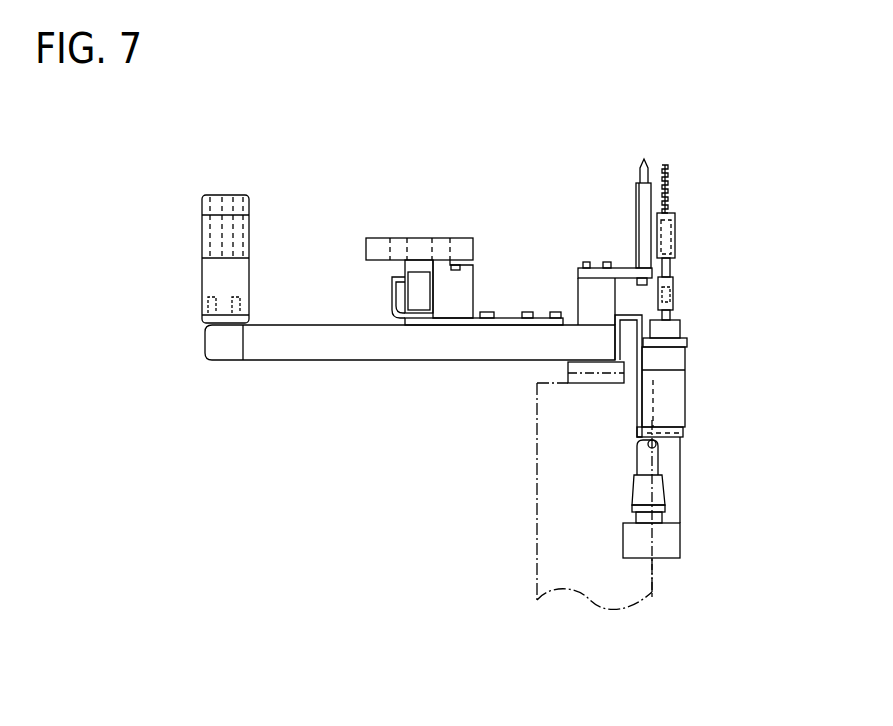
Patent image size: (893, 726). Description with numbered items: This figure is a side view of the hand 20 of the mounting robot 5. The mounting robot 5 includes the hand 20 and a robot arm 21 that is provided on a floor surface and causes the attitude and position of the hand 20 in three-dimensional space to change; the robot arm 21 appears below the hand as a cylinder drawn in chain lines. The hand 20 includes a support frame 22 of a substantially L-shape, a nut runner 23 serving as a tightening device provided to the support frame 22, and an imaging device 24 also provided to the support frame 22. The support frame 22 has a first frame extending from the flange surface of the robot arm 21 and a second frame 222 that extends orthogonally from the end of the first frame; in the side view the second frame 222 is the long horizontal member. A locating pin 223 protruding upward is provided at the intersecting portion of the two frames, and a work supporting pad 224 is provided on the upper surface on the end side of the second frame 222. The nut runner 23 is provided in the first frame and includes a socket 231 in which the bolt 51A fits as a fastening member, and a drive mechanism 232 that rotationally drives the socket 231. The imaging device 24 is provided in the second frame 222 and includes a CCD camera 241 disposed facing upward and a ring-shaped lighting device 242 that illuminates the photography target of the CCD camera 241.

The mounting robot 5 is at (371, 150).
The hand 20 is at (517, 190).
The robot arm 21 is at (530, 528).
The support frame 22 is at (394, 348).
The second frame 222 is at (457, 348).
The locating pin 223 is at (638, 205).
The work supporting pad 224 is at (240, 235).
The nut runner 23 is at (701, 352).
The socket 231 is at (670, 245).
The drive mechanism 232 is at (672, 405).
The imaging device 24 is at (496, 178).
The CCD camera 241 is at (418, 262).
The lighting device 242 is at (465, 250).
The bolt 51A is at (670, 173).